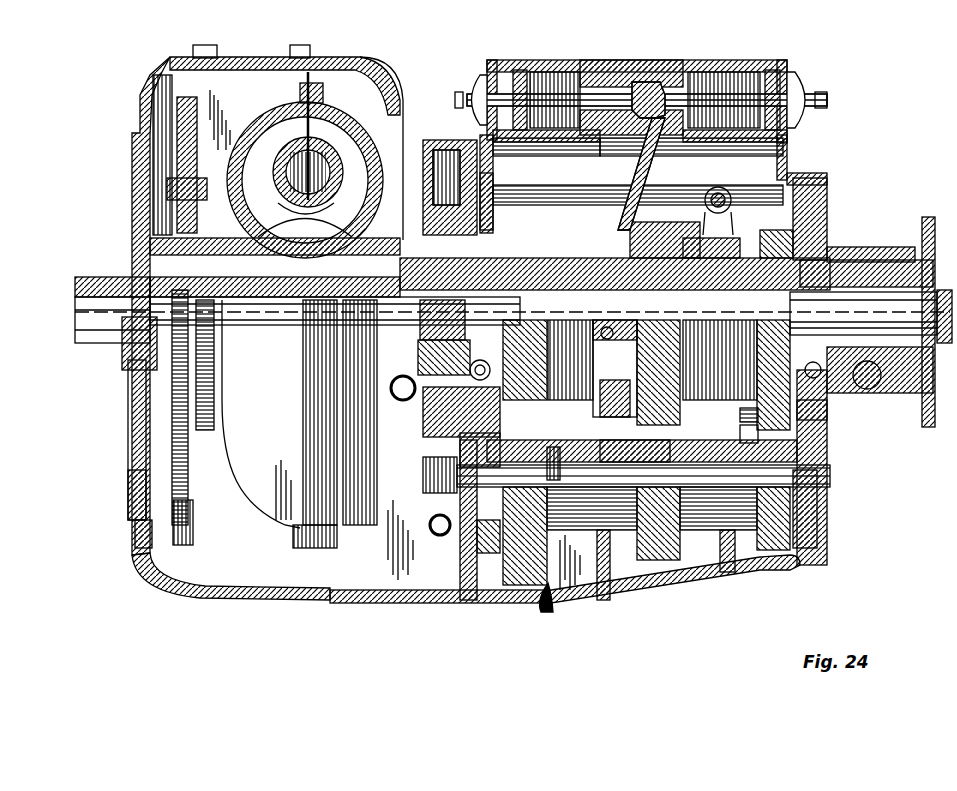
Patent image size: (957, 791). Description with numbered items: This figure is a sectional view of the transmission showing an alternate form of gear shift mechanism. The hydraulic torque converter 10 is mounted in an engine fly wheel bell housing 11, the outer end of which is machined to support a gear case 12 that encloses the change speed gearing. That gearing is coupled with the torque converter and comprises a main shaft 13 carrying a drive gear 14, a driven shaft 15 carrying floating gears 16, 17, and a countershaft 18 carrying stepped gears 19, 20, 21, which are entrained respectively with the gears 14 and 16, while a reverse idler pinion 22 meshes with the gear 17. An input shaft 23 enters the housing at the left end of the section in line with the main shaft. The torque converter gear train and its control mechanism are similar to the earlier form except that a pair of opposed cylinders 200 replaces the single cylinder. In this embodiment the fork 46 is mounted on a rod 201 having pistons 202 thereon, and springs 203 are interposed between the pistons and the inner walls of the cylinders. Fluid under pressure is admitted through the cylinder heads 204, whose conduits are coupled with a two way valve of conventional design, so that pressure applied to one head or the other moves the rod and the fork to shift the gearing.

The hydraulic torque converter 10 is at (273, 68).
The engine fly wheel bell housing 11 is at (398, 112).
The gear case 12 is at (735, 572).
The main shaft 13 is at (302, 312).
The drive gear 14 is at (518, 252).
The driven shaft 15 is at (840, 312).
The floating gear 16 is at (665, 242).
The floating gear 17 is at (775, 240).
The countershaft 18 is at (573, 473).
The stepped gear 19 is at (540, 440).
The stepped gear 20 is at (665, 437).
The stepped gear 21 is at (758, 437).
The reverse idler pinion 22 is at (758, 420).
The input shaft 23 is at (108, 282).
The fork 46 is at (647, 180).
The opposed cylinders 200 is at (487, 60).
The rod 201 is at (623, 118).
The pistons 202 is at (530, 63).
The springs 203 is at (587, 62).
The cylinder heads 204 is at (469, 92).